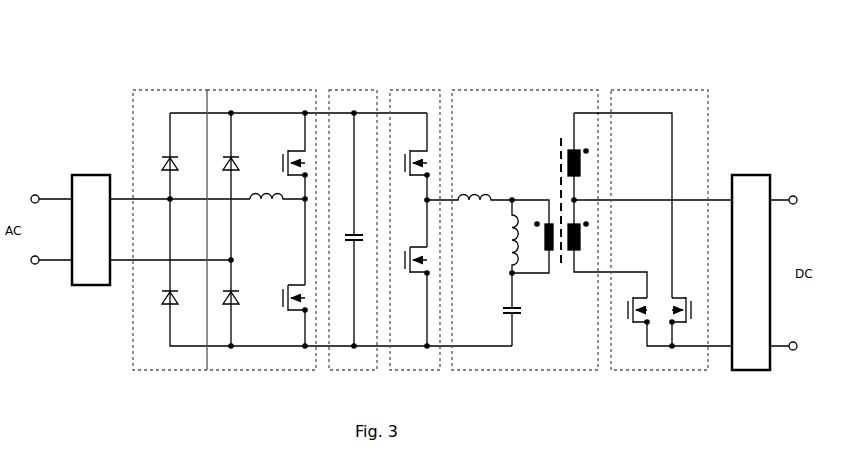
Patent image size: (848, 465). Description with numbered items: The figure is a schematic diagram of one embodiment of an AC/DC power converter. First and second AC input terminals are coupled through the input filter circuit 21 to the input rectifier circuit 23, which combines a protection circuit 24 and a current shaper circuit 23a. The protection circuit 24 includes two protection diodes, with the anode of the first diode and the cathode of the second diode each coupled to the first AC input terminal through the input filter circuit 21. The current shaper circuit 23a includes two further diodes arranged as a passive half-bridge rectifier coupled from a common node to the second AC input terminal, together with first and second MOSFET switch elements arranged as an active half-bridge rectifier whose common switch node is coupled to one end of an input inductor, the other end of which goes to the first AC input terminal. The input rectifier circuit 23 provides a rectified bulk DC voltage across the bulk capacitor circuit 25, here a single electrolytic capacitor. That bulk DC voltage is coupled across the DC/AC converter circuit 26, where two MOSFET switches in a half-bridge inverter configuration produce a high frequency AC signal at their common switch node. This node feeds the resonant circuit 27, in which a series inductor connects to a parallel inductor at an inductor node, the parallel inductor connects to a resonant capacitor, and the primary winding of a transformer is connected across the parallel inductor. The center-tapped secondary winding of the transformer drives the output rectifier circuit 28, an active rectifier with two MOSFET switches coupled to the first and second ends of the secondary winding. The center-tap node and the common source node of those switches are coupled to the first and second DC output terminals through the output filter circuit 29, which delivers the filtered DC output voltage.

The input filter circuit 21 is at (72, 172).
The input rectifier circuit 23 is at (264, 252).
The current shaper circuit 23a is at (278, 332).
The protection circuit 24 is at (147, 357).
The bulk capacitor circuit 25 is at (349, 88).
The DC/AC converter circuit 26 is at (407, 88).
The resonant circuit 27 is at (494, 88).
The output rectifier circuit 28 is at (637, 88).
The output filter circuit 29 is at (753, 168).